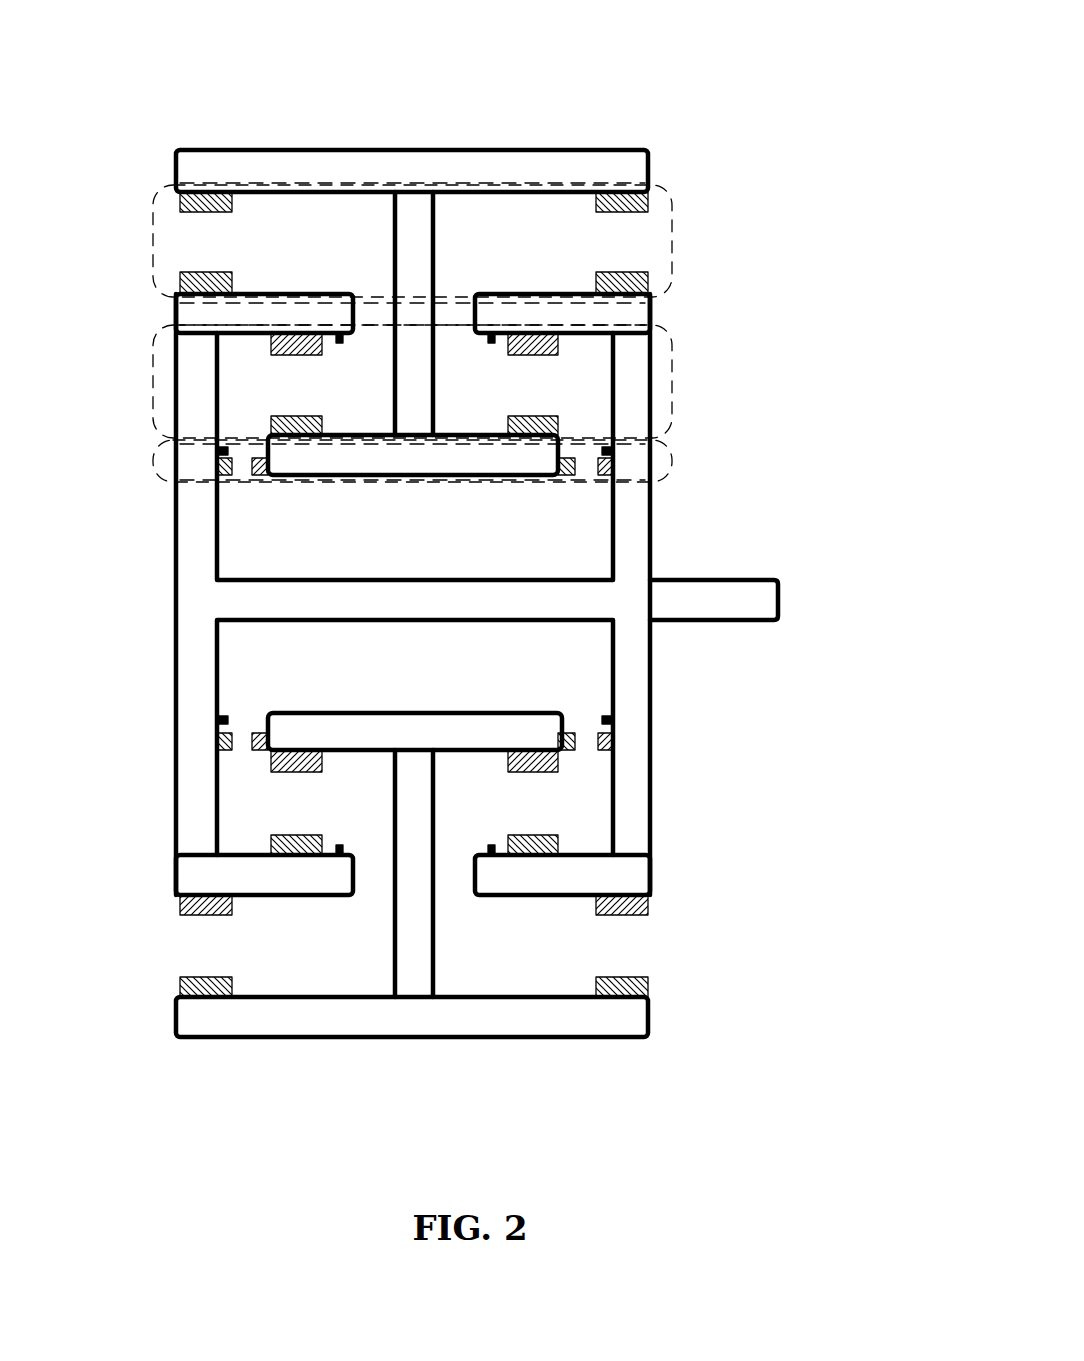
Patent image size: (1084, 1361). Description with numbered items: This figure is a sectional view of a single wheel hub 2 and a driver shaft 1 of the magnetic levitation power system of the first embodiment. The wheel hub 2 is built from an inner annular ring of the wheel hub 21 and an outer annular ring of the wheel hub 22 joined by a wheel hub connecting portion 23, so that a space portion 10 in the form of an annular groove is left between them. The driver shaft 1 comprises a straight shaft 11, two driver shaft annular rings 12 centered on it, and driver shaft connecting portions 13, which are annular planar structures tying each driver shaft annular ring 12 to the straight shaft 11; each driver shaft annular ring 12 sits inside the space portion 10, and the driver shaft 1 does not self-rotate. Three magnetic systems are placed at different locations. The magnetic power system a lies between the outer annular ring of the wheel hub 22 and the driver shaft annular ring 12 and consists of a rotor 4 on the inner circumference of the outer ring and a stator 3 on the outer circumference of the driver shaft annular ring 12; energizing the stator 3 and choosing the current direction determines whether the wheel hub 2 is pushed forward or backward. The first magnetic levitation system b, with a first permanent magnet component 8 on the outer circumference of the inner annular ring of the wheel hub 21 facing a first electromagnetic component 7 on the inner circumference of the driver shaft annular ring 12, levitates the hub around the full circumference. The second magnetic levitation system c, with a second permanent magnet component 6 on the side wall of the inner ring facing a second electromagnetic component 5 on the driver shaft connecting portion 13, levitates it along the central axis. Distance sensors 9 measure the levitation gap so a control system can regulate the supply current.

The driver shaft 1 is at (554, 596).
The wheel hub 2 is at (488, 589).
The stator 3 is at (650, 285).
The rotor 4 is at (645, 203).
The second electromagnetic component 5 is at (613, 470).
The second permanent magnet component 6 is at (575, 470).
The first electromagnetic component 7 is at (560, 345).
The first permanent magnet component 8 is at (560, 428).
The distance sensor 9 is at (491, 350).
The space portion 10 is at (450, 315).
The straight shaft 11 is at (725, 600).
The driver shaft annular ring 12 is at (560, 312).
The driver shaft connecting portion 13 is at (635, 567).
The inner annular ring of the wheel hub 21 is at (522, 594).
The outer annular ring of the wheel hub 22 is at (343, 173).
The wheel hub connecting portion 23 is at (415, 245).
The magnetic power system a is at (165, 247).
The first magnetic levitation system b is at (163, 381).
The second magnetic levitation system c is at (170, 460).